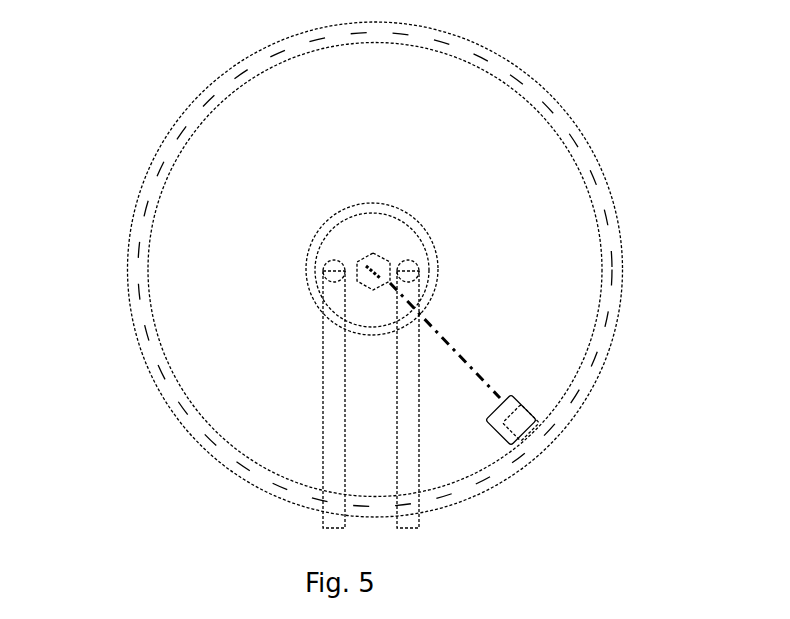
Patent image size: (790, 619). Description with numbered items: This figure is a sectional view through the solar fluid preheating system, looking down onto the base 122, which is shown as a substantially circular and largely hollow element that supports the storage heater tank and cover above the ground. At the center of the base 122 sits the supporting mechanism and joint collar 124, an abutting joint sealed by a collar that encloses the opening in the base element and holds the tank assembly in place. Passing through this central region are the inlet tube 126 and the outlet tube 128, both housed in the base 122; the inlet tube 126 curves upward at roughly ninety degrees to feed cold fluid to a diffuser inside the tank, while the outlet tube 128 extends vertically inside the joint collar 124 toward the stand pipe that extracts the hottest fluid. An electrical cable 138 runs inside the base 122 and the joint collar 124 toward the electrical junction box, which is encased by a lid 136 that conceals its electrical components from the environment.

The base 122 is at (142, 191).
The supporting mechanism and joint collar 124 is at (332, 246).
The inlet tube 126 is at (415, 461).
The outlet tube 128 is at (326, 449).
The lid 136 is at (531, 429).
The electrical cable 138 is at (470, 371).